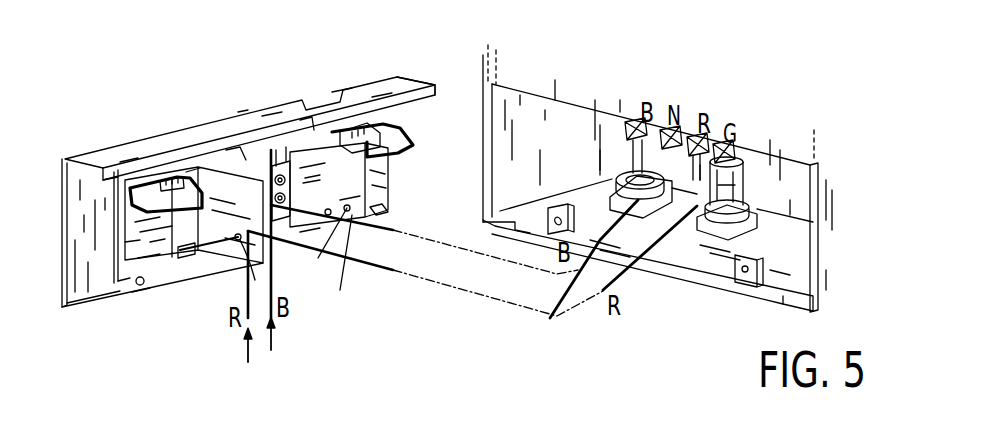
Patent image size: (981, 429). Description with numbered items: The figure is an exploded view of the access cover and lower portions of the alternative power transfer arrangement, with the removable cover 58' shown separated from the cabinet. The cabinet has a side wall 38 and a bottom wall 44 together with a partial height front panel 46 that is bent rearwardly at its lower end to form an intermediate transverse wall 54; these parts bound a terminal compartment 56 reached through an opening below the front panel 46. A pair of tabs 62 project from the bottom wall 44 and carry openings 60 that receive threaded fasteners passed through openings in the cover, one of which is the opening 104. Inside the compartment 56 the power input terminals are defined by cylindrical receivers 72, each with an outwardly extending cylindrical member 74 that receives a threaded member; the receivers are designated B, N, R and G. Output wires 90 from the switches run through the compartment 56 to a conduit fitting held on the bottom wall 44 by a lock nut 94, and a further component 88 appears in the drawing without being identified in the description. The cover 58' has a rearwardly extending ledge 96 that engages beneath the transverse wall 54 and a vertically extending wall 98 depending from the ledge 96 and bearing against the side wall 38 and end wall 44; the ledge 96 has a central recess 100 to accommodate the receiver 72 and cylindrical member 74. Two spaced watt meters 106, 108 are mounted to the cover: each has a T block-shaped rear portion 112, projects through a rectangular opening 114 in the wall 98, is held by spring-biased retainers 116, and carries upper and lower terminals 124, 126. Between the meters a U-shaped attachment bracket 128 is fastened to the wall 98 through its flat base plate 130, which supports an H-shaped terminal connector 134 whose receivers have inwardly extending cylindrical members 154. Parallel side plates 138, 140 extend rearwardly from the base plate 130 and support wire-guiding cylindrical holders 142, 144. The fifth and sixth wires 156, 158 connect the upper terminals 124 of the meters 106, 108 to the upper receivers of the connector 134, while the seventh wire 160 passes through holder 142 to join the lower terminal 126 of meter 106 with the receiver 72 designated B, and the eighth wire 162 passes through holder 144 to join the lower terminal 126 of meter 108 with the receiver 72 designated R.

The side wall 38 is at (498, 114).
The bottom wall 44 is at (722, 270).
The front panel 46 is at (798, 160).
The intermediate transverse wall 54 is at (605, 118).
The terminal compartment 56 is at (560, 116).
The access cover plate 58' is at (222, 68).
The openings 60 is at (558, 214).
The tabs 62 is at (768, 254).
The cylindrical receivers 72 is at (627, 122).
The cylindrical member 74 is at (711, 156).
The terminal nut 88 is at (630, 188).
The output wires 90 is at (735, 195).
The lock nut 94 is at (760, 213).
The ledge 96 is at (392, 80).
The vertically extending wall 98 is at (74, 232).
The central recess 100 is at (286, 152).
The opening 104 is at (140, 286).
The watt meter 106 is at (415, 81).
The watt meter 108 is at (156, 157).
The rear portion 112 is at (389, 183).
The rectangular opening 114 is at (127, 243).
The spring-biased retainers 116 is at (113, 272).
The upper terminal 124 is at (193, 173).
The lower terminal 126 is at (388, 210).
The attachment bracket 128 is at (260, 138).
The base plate 130 is at (245, 158).
The terminal connector 134 is at (327, 215).
The side plate 138 is at (273, 268).
The side plate 140 is at (357, 237).
The cylindrical holder 142 is at (352, 222).
The cylindrical holder 144 is at (245, 262).
The cylindrical member 154 is at (315, 182).
The fifth wire 156 is at (399, 129).
The sixth wire 158 is at (130, 192).
The seventh wire 160 is at (384, 236).
The eighth wire 162 is at (376, 273).